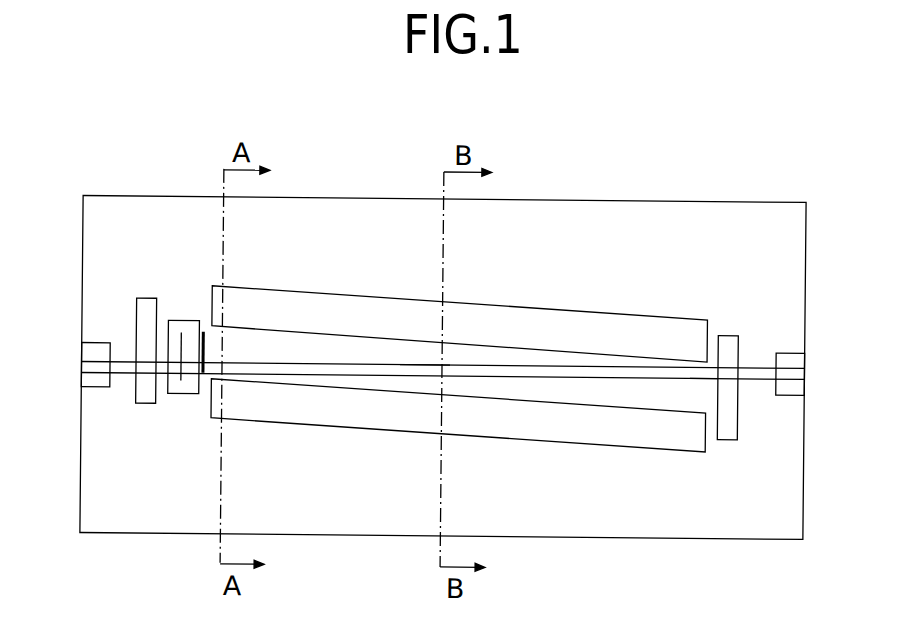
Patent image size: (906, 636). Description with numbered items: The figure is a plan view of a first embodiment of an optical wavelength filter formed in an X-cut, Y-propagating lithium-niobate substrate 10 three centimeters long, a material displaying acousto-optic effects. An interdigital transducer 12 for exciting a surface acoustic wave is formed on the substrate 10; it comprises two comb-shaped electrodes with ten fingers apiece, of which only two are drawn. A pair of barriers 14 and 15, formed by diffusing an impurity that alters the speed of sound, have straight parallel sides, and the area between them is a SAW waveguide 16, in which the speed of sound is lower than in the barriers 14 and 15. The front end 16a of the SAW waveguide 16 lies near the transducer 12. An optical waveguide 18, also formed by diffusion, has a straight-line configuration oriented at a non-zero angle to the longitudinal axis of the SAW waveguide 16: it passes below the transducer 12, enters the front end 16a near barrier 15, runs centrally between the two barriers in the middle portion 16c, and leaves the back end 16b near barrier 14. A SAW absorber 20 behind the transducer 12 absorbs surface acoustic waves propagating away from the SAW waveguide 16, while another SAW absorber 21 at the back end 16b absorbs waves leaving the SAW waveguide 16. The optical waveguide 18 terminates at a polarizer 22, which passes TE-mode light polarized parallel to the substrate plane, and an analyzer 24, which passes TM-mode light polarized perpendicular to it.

The substrate 10 is at (795, 479).
The interdigital transducer 12 is at (183, 397).
The barrier 14 is at (545, 324).
The barrier 15 is at (541, 431).
The SAW waveguide 16 is at (293, 343).
The front end 16a is at (212, 349).
The back end 16b is at (706, 393).
The middle portion 16c is at (417, 348).
The optical waveguide 18 is at (373, 369).
The SAW absorber 20 is at (145, 306).
The SAW absorber 21 is at (727, 343).
The polarizer 22 is at (88, 381).
The analyzer 24 is at (797, 355).